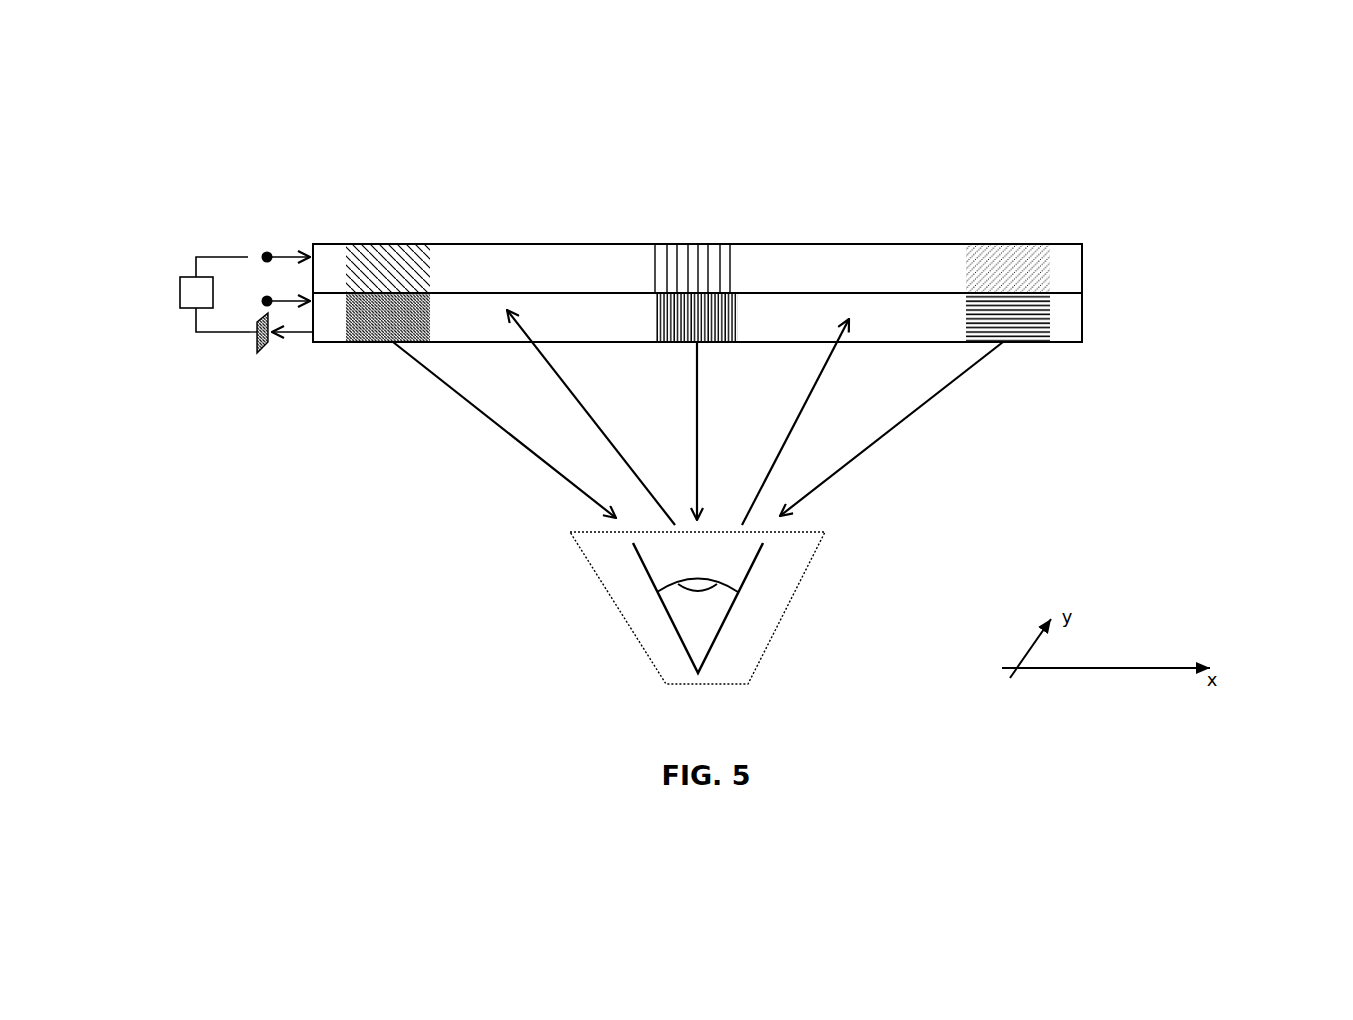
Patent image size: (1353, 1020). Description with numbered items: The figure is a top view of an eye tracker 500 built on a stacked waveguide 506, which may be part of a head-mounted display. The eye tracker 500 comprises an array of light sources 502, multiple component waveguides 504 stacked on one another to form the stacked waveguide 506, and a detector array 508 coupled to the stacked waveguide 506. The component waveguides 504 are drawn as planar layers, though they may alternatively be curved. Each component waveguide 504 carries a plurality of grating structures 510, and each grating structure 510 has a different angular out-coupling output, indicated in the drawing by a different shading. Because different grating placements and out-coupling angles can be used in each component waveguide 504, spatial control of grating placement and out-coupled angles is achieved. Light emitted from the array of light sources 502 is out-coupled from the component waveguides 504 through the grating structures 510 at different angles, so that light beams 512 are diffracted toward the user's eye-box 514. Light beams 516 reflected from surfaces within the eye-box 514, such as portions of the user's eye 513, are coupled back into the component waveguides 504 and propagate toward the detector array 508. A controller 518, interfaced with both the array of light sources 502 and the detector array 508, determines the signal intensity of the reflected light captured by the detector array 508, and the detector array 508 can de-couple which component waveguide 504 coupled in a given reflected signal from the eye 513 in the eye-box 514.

The eye tracker 500 is at (922, 131).
The array of light sources 502 is at (285, 300).
The component waveguide 504 is at (1082, 259).
The stacked waveguide 506 is at (901, 238).
The detector array 508 is at (263, 333).
The grating structure 510 is at (380, 260).
The light beam 512 is at (525, 443).
The eye 513 is at (667, 613).
The eye-box 514 is at (795, 597).
The reflected light beam 516 is at (547, 363).
The controller 518 is at (180, 292).